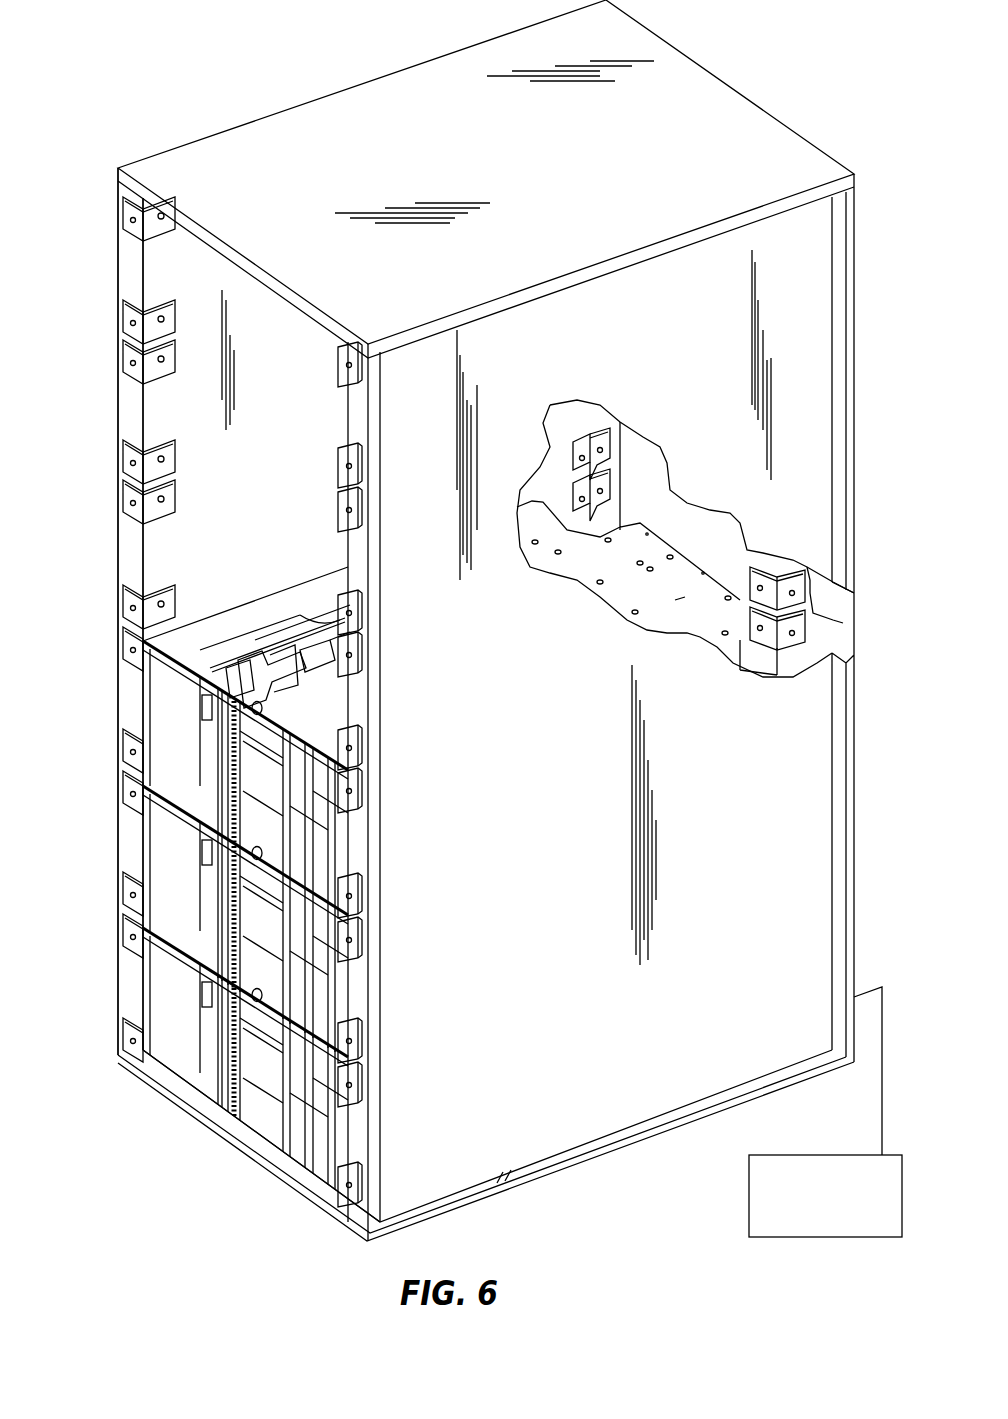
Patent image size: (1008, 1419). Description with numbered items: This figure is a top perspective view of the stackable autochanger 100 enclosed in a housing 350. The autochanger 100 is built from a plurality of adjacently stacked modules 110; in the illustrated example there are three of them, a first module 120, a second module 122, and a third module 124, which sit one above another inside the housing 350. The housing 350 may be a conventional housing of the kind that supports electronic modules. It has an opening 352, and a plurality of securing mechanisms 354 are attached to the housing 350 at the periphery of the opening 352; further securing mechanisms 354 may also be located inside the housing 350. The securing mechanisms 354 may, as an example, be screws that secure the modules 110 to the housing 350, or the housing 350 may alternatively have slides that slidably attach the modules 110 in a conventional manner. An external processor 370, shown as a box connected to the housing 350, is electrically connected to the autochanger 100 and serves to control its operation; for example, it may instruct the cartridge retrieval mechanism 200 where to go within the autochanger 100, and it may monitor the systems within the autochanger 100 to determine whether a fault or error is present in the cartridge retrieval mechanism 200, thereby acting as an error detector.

The stackable autochanger 100 is at (258, 70).
The modules 110 is at (236, 1140).
The first module 120 is at (117, 978).
The second module 122 is at (117, 831).
The third module 124 is at (117, 697).
The cartridge retrieval mechanism 200 is at (307, 640).
The housing 350 is at (732, 87).
The opening 352 is at (175, 557).
The securing mechanisms 354 is at (122, 313).
The external processor 370 is at (749, 1192).